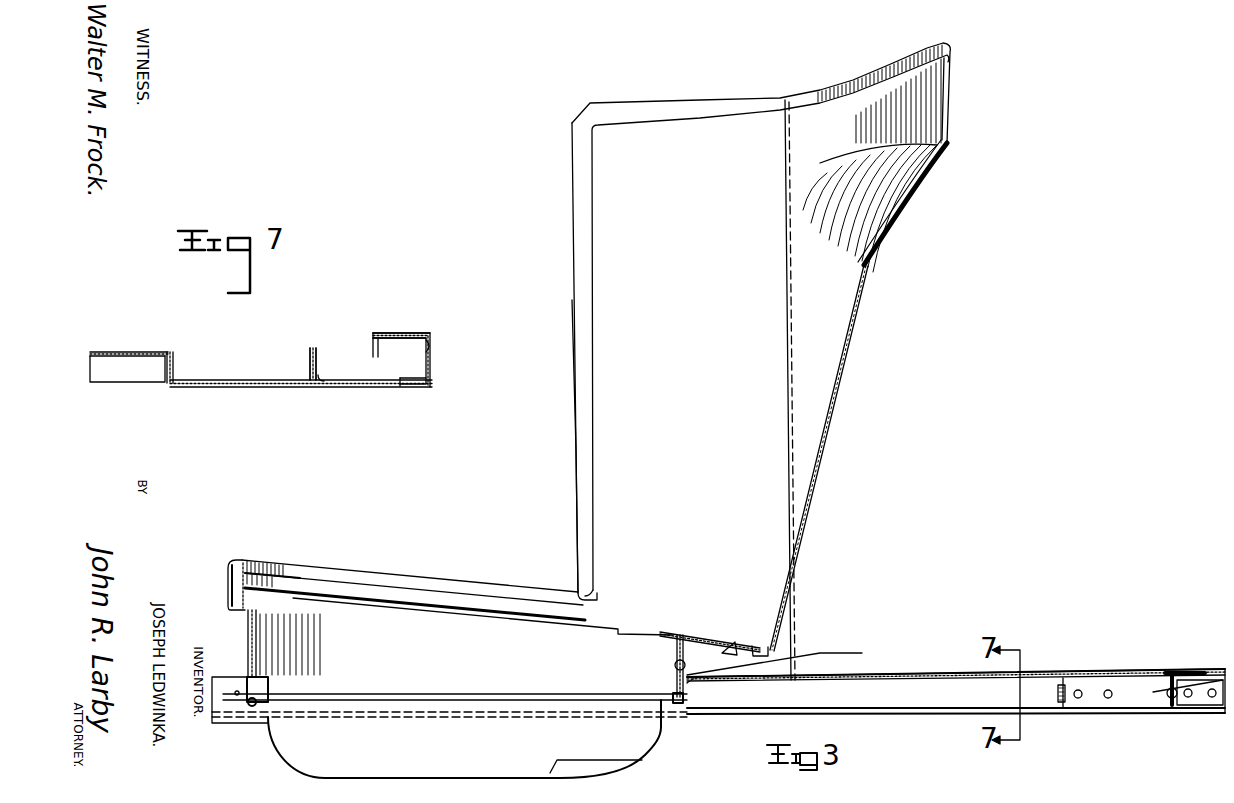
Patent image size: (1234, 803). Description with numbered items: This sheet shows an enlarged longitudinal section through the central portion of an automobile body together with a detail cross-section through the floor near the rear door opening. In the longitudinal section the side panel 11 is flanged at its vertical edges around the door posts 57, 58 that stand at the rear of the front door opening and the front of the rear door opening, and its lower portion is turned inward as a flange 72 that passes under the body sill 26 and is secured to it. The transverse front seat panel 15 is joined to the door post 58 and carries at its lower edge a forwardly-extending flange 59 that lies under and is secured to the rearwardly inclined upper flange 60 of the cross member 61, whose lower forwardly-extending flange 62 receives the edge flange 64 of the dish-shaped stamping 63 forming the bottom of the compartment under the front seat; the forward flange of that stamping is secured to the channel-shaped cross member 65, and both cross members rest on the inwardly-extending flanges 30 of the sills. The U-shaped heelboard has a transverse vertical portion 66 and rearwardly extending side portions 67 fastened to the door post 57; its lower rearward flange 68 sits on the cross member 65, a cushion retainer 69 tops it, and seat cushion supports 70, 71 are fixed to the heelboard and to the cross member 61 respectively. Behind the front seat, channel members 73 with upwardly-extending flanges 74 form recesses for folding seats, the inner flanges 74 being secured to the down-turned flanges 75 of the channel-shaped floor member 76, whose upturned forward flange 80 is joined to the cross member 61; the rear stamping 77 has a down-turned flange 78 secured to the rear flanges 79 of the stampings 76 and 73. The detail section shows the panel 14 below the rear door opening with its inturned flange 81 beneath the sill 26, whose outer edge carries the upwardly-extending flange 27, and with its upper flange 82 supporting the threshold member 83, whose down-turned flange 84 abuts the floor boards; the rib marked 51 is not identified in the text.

In FIG. 3, the side panel 11 is at (633, 225).
In FIG. 3, the front seat panel 15 is at (868, 195).
In FIG. 3, the door post 58 is at (787, 358).
In FIG. 3, the door post 57 is at (578, 352).
In FIG. 3, the side portion of heelboard panel 67 is at (413, 657).
In FIG. 3, the cushion retainer 69 is at (230, 580).
In FIG. 3, the support for front seat cushion 70 is at (273, 588).
In FIG. 3, the transverse vertical portion of heelboard panel 66 is at (255, 643).
In FIG. 3, the rearwardly extending flange 68 is at (265, 672).
In FIG. 3, the channel-shaped cross member 65 is at (272, 687).
In FIG. 3, the inwardly-extending flange 30 is at (527, 695).
In FIG. 3, the edge flange 64 is at (252, 706).
In FIG. 3, the dish-shaped stamping 63 is at (648, 760).
In FIG. 3, the forwardly-extending flange 62 is at (680, 693).
In FIG. 3, the support for front seat cushion 71 is at (672, 633).
In FIG. 3, the cross member 61 is at (674, 660).
In FIG. 3, the upper flange 60 is at (752, 642).
In FIG. 3, the upturned flange 80 is at (862, 653).
In FIG. 3, the forwardly-extending flange 59 is at (820, 652).
In FIG. 3, the inturned flange 72 is at (768, 716).
In FIG. 3, the floor member 76 is at (953, 673).
In FIG. 7, the floor member 76 is at (127, 351).
In FIG. 3, the down-turned flange 75 is at (1042, 697).
In FIG. 7, the down-turned flange 75 is at (158, 380).
In FIG. 3, the stamping 77 is at (1190, 672).
In FIG. 3, the flange 79 is at (1153, 690).
In FIG. 3, the down-turned flange 78 is at (1231, 680).
In FIG. 7, the upwardly-extending flange 74 is at (172, 362).
In FIG. 7, the channel member 73 is at (225, 379).
In FIG. 7, the rib 51 is at (318, 360).
In FIG. 7, the body sill 26 is at (328, 380).
In FIG. 7, the panel below rear door opening 14 is at (437, 365).
In FIG. 7, the threshold member 83 is at (393, 334).
In FIG. 7, the down-turned flange 84 is at (372, 340).
In FIG. 7, the upper flange 82 is at (432, 350).
In FIG. 7, the inturned flange 81 is at (417, 388).
In FIG. 7, the upwardly-extending flange 27 is at (405, 385).